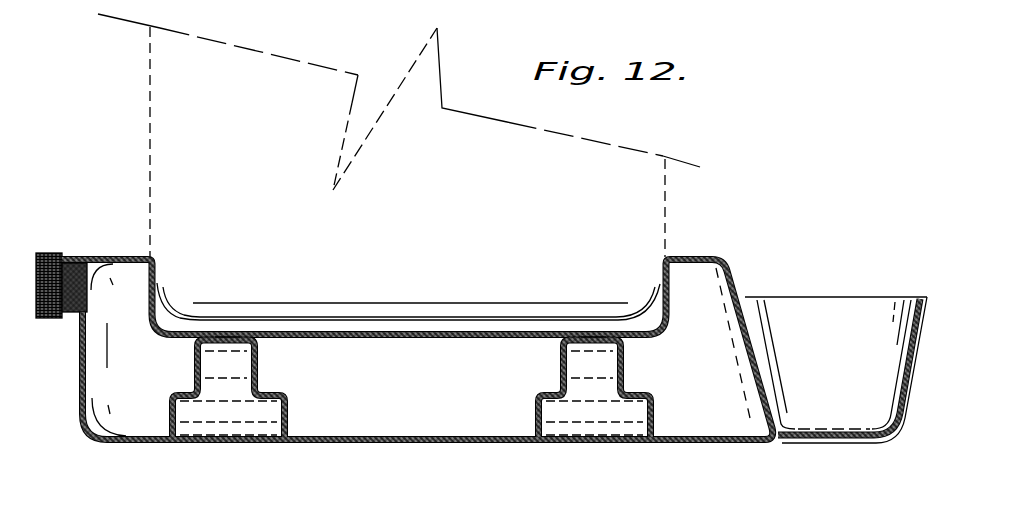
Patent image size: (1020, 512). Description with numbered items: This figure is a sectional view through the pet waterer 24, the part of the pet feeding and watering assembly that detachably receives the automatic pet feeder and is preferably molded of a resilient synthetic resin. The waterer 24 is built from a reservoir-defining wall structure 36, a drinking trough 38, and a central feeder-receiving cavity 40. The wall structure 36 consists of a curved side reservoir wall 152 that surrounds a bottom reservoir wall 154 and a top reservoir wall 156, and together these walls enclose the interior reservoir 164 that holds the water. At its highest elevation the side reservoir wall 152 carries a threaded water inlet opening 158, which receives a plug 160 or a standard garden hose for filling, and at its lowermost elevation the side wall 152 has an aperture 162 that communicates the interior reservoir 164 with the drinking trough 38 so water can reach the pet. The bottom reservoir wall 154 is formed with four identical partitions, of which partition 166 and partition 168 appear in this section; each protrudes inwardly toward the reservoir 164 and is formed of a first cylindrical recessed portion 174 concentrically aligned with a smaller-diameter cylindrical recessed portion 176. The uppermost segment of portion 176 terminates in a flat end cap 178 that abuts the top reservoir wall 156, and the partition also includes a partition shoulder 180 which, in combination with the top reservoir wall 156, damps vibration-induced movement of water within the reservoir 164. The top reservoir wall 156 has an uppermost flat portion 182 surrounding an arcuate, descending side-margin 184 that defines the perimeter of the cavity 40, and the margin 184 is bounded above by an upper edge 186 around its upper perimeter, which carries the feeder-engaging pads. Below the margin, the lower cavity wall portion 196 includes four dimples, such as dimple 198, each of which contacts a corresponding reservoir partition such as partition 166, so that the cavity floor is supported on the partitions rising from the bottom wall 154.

The pet waterer 24 is at (368, 240).
The reservoir-defining wall structure 36 is at (757, 250).
The drinking trough 38 is at (838, 308).
The feeder-receiving cavity 40 is at (546, 270).
The side reservoir wall 152 is at (86, 397).
The bottom reservoir wall 154 is at (420, 436).
The top reservoir wall 156 is at (423, 330).
The threaded water inlet opening 158 is at (72, 257).
The plug 160 is at (47, 253).
The aperture 162 is at (778, 427).
The interior reservoir 164 is at (448, 368).
The partition 166 is at (258, 372).
The partition 168 is at (626, 380).
The first cylindrical recessed portion 174 is at (290, 421).
The cylindrical recessed portion 176 is at (197, 368).
The flat end cap 178 is at (245, 348).
The partition shoulder 180 is at (257, 347).
The uppermost flat portion 182 is at (680, 257).
The descending side-margin 184 is at (155, 293).
The upper edge 186 is at (165, 257).
The lower cavity wall portion 196 is at (367, 332).
The dimple 198 is at (227, 330).